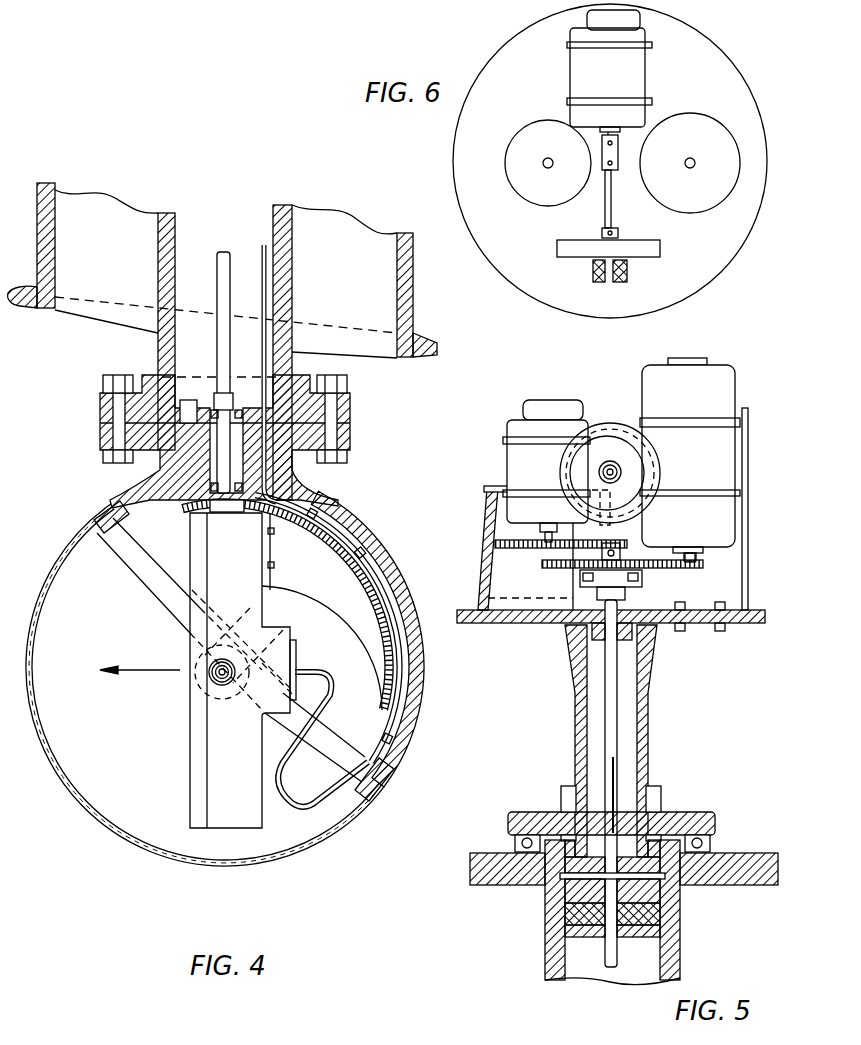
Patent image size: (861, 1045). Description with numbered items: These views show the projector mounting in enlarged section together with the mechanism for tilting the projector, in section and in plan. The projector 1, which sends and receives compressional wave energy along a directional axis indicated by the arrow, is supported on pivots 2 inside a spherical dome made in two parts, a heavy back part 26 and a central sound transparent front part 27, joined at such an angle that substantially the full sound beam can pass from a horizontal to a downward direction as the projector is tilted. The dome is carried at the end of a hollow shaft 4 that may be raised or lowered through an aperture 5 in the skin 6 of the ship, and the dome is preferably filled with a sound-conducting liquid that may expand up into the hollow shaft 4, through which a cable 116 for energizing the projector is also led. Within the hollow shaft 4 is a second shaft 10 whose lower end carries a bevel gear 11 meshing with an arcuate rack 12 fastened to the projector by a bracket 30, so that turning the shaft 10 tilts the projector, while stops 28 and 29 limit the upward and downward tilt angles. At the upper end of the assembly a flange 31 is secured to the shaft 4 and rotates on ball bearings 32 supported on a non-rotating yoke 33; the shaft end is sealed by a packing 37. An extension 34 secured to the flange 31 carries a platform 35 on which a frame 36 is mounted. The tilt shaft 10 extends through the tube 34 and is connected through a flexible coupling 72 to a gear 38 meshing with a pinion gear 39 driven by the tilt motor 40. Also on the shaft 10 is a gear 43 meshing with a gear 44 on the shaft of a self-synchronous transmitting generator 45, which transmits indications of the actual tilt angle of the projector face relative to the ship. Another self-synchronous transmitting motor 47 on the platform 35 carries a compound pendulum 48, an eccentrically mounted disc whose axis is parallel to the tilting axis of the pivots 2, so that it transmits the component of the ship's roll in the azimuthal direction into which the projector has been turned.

In FIG. 4, the projector 1 is at (240, 815).
In FIG. 4, the pivots 2 is at (213, 680).
In FIG. 4, the hollow shaft 4 is at (285, 348).
In FIG. 5, the hollow shaft 4 is at (670, 950).
In FIG. 4, the aperture 5 is at (97, 312).
In FIG. 4, the skin 6 is at (20, 296).
In FIG. 4, the second shaft 10 is at (226, 340).
In FIG. 5, the second shaft 10 is at (612, 963).
In FIG. 4, the bevel gear 11 is at (230, 512).
In FIG. 4, the arcuate rack 12 is at (392, 672).
In FIG. 4, the heavy back part 26 is at (343, 525).
In FIG. 4, the sound transparent front part 27 is at (98, 820).
In FIG. 4, the stop 28 is at (372, 575).
In FIG. 4, the stop 29 is at (383, 613).
In FIG. 4, the bracket 30 is at (300, 560).
In FIG. 4, the cable 116 is at (307, 803).
In FIG. 5, the flange 31 is at (688, 813).
In FIG. 5, the ball bearings 32 is at (703, 843).
In FIG. 5, the yoke 33 is at (733, 860).
In FIG. 5, the extension 34 is at (647, 738).
In FIG. 5, the platform 35 is at (703, 625).
In FIG. 5, the frame 36 is at (748, 552).
In FIG. 5, the packing 37 is at (673, 915).
In FIG. 5, the gear 38 is at (657, 568).
In FIG. 5, the pinion gear 39 is at (688, 568).
In FIG. 6, the tilt motor 40 is at (715, 152).
In FIG. 5, the tilt motor 40 is at (708, 455).
In FIG. 5, the gear 43 is at (622, 547).
In FIG. 5, the gear 44 is at (510, 549).
In FIG. 6, the self-synchronous transmitting generator 45 is at (518, 173).
In FIG. 5, the self-synchronous transmitting generator 45 is at (515, 458).
In FIG. 6, the self-synchronous transmitting motor 47 is at (625, 87).
In FIG. 5, the self-synchronous transmitting motor 47 is at (602, 435).
In FIG. 6, the compound pendulum 48 is at (662, 247).
In FIG. 5, the compound pendulum 48 is at (613, 443).
In FIG. 5, the flexible coupling 72 is at (587, 575).